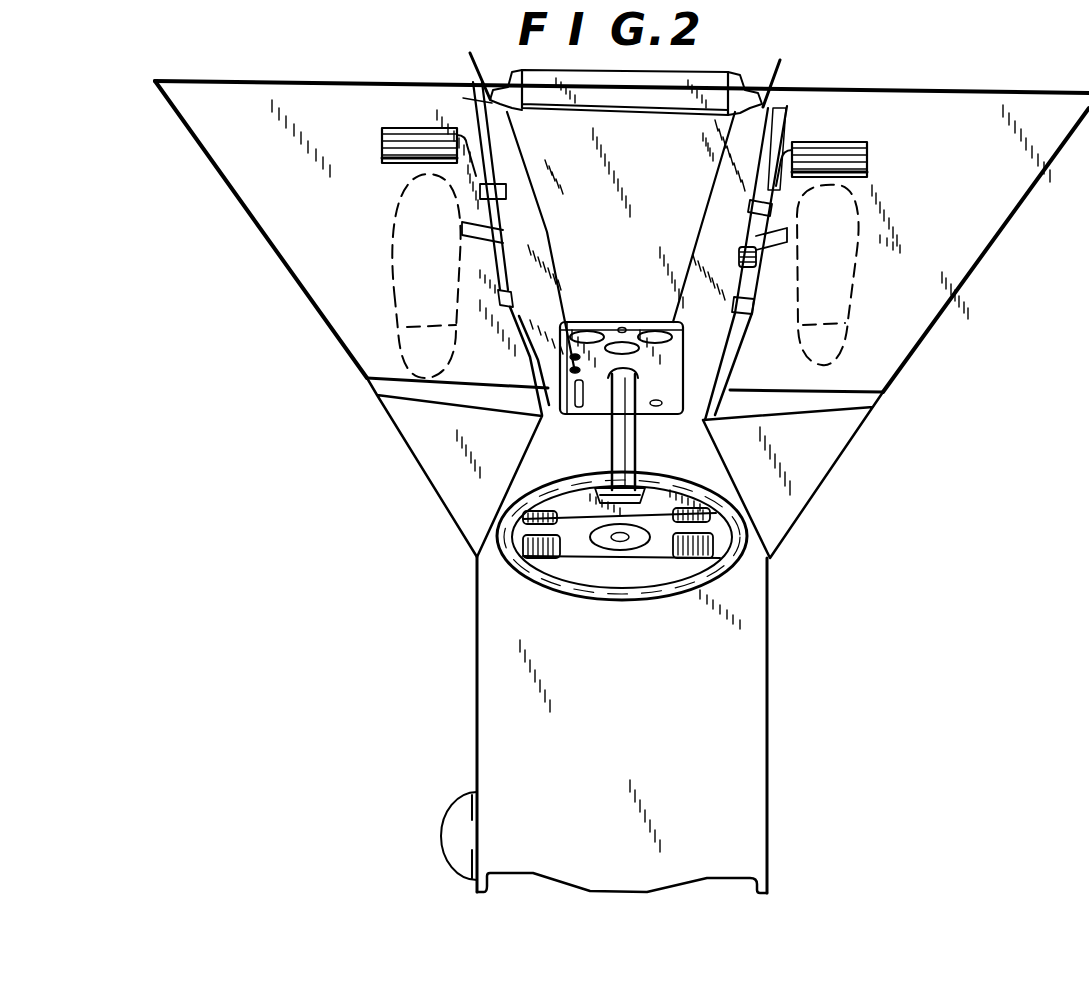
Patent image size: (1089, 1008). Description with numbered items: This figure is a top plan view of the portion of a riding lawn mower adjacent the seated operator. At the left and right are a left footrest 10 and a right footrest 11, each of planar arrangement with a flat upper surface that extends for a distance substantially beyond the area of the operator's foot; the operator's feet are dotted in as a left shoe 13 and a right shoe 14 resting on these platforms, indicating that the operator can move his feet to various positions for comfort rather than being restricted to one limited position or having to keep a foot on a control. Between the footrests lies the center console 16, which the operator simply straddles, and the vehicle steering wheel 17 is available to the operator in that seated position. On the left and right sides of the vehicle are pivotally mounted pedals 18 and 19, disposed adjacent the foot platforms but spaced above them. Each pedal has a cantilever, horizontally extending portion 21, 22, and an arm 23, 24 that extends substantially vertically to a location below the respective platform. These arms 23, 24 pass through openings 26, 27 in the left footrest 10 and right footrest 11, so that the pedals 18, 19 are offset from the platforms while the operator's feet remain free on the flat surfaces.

The left footrest 10 is at (330, 330).
The right footrest 11 is at (983, 248).
The left shoe 13 is at (393, 250).
The right shoe 14 is at (853, 259).
The center console 16 is at (643, 408).
The steering wheel 17 is at (678, 600).
The left pedal 18 is at (462, 192).
The right pedal 19 is at (790, 191).
The cantilever horizontally extending portion 21 is at (432, 127).
The cantilever horizontally extending portion 22 is at (828, 142).
The arm 23 is at (470, 180).
The arm 24 is at (764, 211).
The opening 26 is at (462, 228).
The opening 27 is at (787, 240).